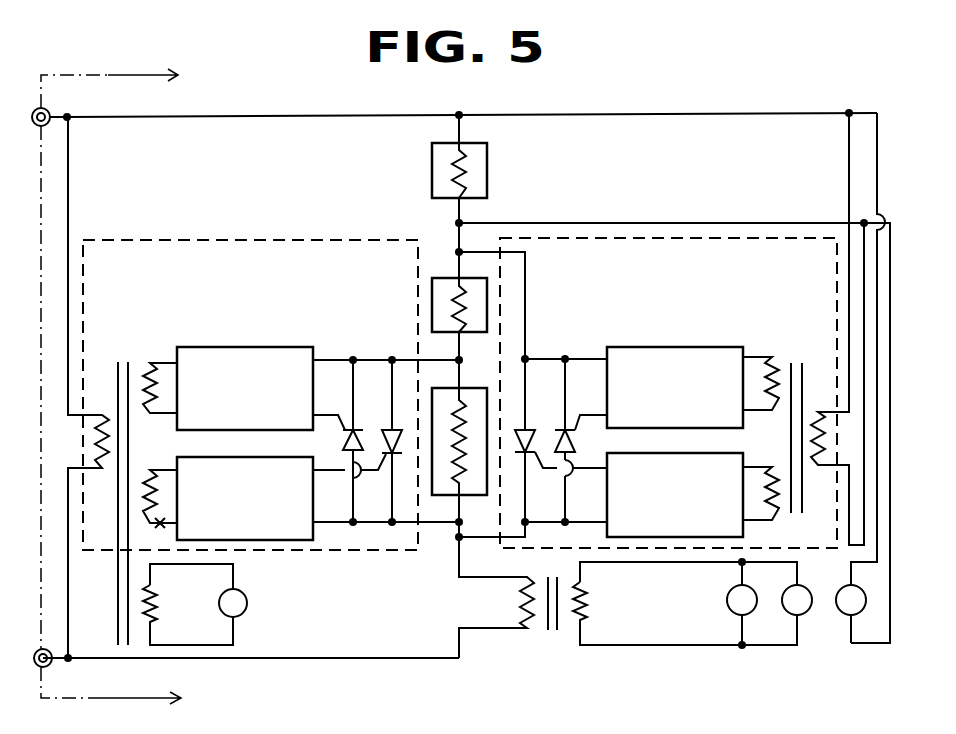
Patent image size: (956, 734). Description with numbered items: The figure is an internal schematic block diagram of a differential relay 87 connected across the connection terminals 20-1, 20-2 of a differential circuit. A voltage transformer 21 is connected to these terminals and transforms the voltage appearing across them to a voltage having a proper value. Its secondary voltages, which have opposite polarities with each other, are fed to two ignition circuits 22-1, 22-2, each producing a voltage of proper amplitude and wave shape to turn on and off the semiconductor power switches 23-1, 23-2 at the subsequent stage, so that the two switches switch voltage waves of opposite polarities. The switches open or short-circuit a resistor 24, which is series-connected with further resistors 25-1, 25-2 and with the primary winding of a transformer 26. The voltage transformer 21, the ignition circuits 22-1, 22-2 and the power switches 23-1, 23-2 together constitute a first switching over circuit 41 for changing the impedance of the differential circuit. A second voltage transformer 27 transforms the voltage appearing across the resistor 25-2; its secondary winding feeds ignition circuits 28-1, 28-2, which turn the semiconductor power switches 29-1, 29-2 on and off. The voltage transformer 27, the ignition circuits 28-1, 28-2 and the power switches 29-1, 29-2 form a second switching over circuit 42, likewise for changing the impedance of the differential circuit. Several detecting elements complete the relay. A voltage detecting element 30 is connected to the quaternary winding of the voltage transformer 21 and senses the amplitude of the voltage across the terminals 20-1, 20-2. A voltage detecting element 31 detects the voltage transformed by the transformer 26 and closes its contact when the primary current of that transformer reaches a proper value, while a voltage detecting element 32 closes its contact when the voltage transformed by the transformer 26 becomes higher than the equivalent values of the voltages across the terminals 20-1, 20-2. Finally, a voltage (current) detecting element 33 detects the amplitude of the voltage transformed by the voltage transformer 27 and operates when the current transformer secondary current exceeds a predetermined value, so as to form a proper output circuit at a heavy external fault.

The connection terminal 20-1 is at (50, 108).
The connection terminal 20-2 is at (48, 668).
The differential relay 87 is at (126, 385).
The first switching over circuit 41 is at (258, 240).
The second switching over circuit 42 is at (672, 238).
The voltage transformer 21 is at (112, 380).
The ignition circuit 22-1 is at (248, 347).
The ignition circuit 22-2 is at (266, 541).
The semiconductor power switch 23-1 is at (364, 428).
The semiconductor power switch 23-2 is at (397, 462).
The resistor 24 is at (473, 402).
The resistor 25-1 is at (444, 290).
The resistor 25-2 is at (432, 180).
The transformer 26 is at (553, 632).
The voltage transformer 27 is at (800, 385).
The ignition circuit 28-1 is at (730, 347).
The ignition circuit 28-2 is at (745, 522).
The semiconductor power switch 29-1 is at (537, 430).
The semiconductor power switch 29-2 is at (570, 428).
The voltage detecting element 30 is at (247, 603).
The voltage detecting element 31 is at (727, 601).
The voltage detecting element 32 is at (806, 592).
The voltage (current) detecting element 33 is at (839, 603).